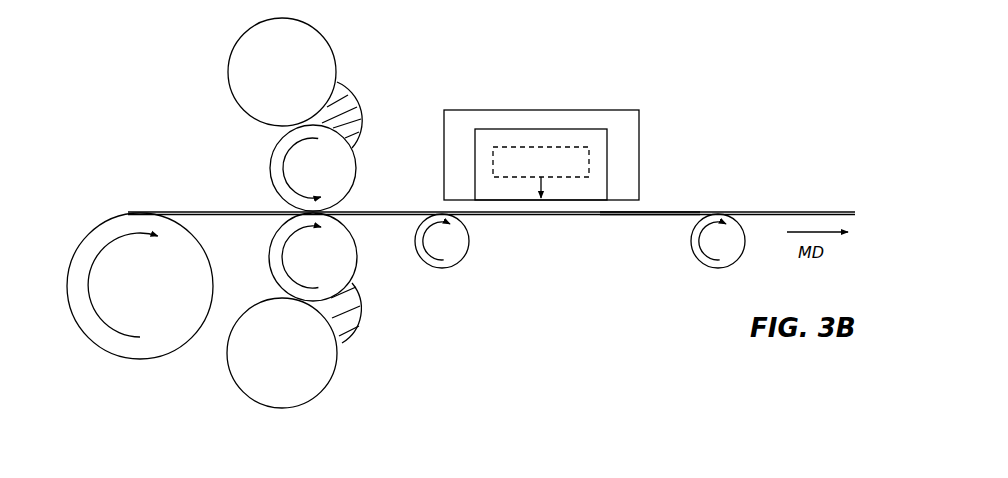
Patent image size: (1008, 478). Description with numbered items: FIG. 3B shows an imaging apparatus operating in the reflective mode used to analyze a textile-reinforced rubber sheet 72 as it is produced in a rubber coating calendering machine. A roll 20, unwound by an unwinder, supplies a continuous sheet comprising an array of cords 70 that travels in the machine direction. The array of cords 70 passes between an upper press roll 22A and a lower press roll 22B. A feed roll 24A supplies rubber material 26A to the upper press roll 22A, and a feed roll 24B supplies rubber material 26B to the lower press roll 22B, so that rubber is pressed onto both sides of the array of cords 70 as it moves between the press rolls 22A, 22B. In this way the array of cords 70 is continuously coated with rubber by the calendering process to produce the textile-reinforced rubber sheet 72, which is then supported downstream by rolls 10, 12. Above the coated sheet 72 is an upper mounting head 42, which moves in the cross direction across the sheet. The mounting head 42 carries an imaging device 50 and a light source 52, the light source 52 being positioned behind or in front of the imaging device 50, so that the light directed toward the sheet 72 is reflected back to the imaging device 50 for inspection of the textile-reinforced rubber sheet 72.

The roll 10 is at (470, 245).
The roll 12 is at (702, 265).
The roll 20 is at (138, 358).
The press roll 22A is at (273, 145).
The press roll 22B is at (358, 263).
The feed roll 24A is at (230, 72).
The feed roll 24B is at (337, 372).
The rubber material 26A is at (338, 83).
The rubber material 26B is at (362, 312).
The upper mounting head 42 is at (639, 187).
The imaging device 50 is at (608, 132).
The light source 52 is at (589, 168).
The array of cords 70 is at (175, 213).
The textile-reinforced rubber sheet 72 is at (608, 217).